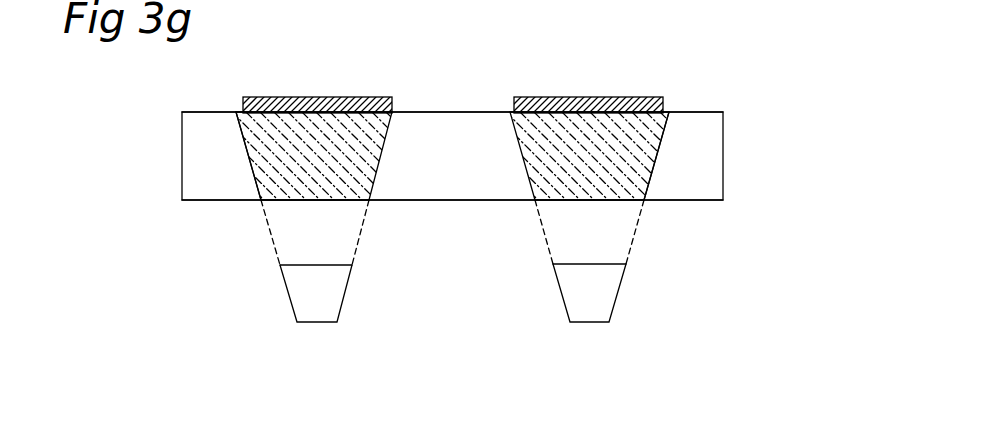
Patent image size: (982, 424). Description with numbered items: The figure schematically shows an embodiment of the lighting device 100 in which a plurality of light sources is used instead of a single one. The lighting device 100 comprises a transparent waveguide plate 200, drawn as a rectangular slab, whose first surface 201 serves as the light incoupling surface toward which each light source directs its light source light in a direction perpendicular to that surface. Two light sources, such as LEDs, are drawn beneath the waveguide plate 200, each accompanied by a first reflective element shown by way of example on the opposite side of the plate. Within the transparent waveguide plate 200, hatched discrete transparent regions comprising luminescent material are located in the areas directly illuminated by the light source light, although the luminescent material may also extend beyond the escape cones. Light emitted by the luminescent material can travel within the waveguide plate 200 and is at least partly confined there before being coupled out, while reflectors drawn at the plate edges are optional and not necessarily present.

The lighting device 100 is at (448, 100).
The transparent waveguide plate 200 is at (694, 226).
The first surface 201 is at (414, 202).